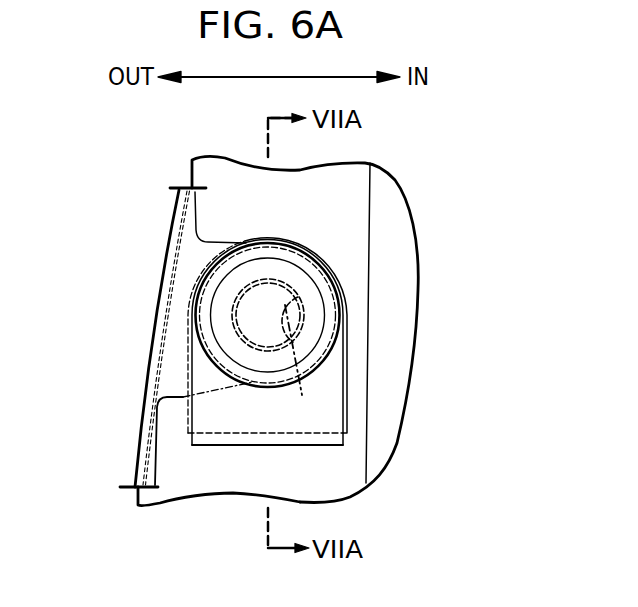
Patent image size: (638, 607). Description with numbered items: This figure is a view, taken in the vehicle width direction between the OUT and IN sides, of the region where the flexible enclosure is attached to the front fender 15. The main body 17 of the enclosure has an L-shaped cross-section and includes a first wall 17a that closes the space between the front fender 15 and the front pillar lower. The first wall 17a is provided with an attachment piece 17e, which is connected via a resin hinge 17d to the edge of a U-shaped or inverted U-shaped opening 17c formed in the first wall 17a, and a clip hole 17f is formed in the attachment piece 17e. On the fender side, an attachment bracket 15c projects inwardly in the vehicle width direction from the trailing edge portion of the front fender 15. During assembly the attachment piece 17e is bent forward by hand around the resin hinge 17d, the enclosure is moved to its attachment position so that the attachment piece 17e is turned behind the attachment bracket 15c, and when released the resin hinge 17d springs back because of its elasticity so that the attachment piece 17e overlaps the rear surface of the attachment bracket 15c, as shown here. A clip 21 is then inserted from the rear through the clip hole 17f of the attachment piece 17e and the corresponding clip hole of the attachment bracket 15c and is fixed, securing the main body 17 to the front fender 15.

The front fender 15 is at (158, 288).
The attachment bracket 15c is at (212, 248).
The main body 17 is at (370, 233).
The first wall 17a is at (347, 467).
The opening 17c is at (346, 386).
The resin hinge 17d is at (255, 447).
The attachment piece 17e is at (333, 363).
The clip hole 17f is at (302, 366).
The clip 21 is at (295, 278).